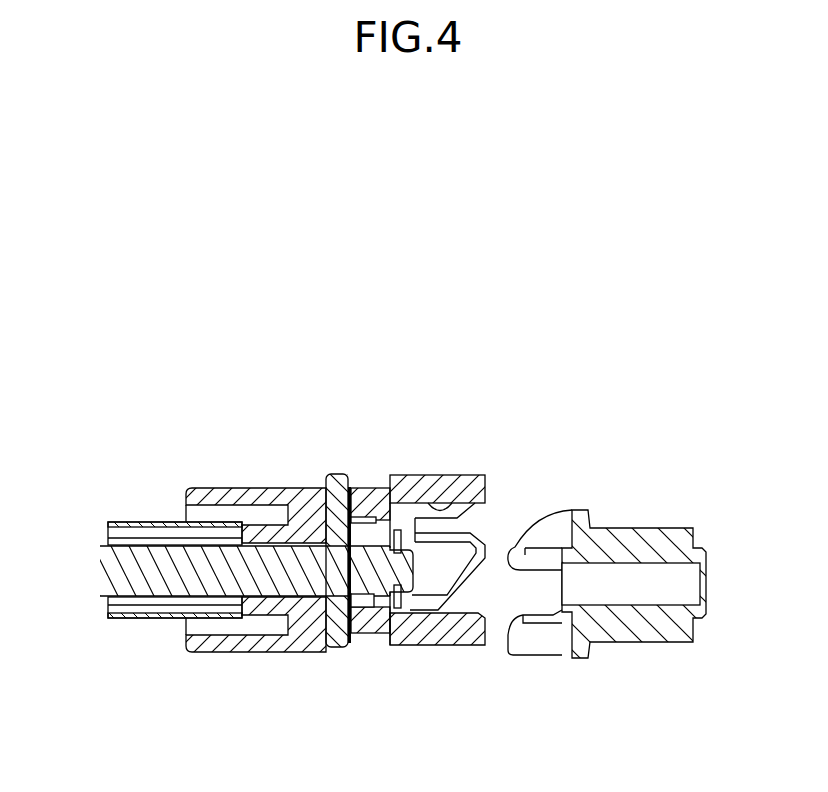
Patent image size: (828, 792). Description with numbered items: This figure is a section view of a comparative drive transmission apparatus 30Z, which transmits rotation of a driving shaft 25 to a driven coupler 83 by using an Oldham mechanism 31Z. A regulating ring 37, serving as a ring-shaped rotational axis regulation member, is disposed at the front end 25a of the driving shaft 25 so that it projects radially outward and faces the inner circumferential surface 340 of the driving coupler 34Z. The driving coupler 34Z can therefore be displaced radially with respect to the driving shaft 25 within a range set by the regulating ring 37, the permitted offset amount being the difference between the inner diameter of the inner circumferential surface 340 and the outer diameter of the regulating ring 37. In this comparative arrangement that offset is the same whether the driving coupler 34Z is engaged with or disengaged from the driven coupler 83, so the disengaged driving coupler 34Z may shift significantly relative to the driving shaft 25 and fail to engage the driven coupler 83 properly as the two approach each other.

The driving shaft 25 is at (108, 568).
The front end of the driving shaft 25a is at (413, 590).
The drive transmission apparatus 30Z is at (338, 426).
The Oldham mechanism 31Z is at (207, 468).
The driving coupler 34Z is at (402, 647).
The regulating ring 37 is at (395, 528).
The inner circumferential surface 340 is at (450, 502).
The driven coupler 83 is at (627, 645).